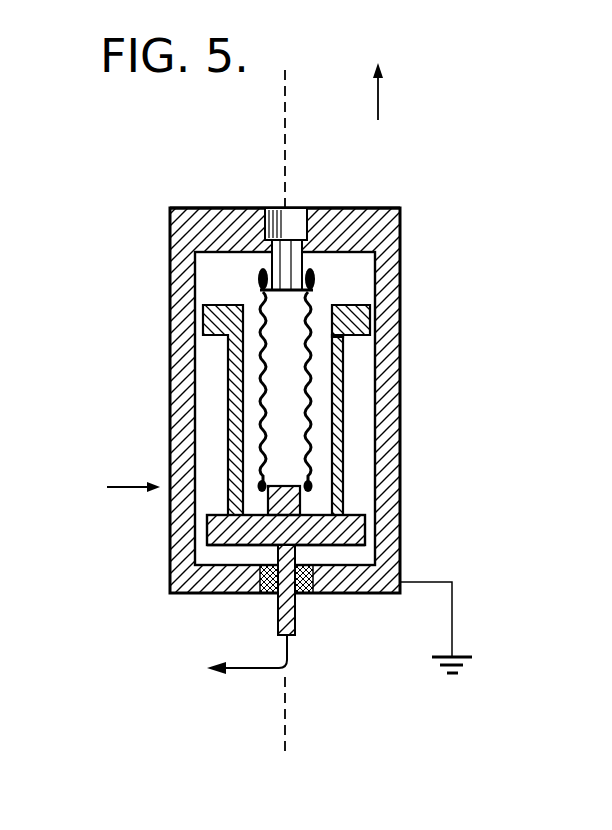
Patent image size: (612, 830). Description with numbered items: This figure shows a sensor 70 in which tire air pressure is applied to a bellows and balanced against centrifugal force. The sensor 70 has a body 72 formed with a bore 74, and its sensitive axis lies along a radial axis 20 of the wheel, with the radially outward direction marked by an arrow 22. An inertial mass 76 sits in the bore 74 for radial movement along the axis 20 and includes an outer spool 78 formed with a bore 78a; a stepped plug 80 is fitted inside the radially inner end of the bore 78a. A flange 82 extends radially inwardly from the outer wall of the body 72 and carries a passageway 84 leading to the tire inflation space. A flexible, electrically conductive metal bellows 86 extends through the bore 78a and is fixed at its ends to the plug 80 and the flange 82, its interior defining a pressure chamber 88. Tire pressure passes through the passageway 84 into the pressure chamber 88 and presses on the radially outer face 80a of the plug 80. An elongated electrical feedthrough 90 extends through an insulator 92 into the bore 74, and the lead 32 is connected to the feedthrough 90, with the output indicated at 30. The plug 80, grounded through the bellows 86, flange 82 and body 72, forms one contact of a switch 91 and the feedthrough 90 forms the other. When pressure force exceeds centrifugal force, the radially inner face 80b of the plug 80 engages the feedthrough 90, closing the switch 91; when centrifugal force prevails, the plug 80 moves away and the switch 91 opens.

The radial axis 20 is at (285, 117).
The arrow 22 is at (378, 97).
The output signal 30 is at (201, 669).
The lead 32 is at (250, 662).
The sensor 70 is at (116, 177).
The body 72 is at (393, 207).
The bore 74 is at (372, 382).
The inertial mass 76 is at (217, 373).
The outer spool 78 is at (343, 357).
The bore 78a is at (355, 302).
The stepped plug 80 is at (327, 512).
The radially outer face 80a is at (283, 482).
The radially inner face 80b is at (317, 550).
The flange 82 is at (305, 262).
The passageway 84 is at (287, 207).
The bellows 86 is at (260, 296).
The pressure chamber 88 is at (297, 398).
The electrical feedthrough 90 is at (295, 630).
The switch 91 is at (117, 489).
The insulator 92 is at (333, 593).